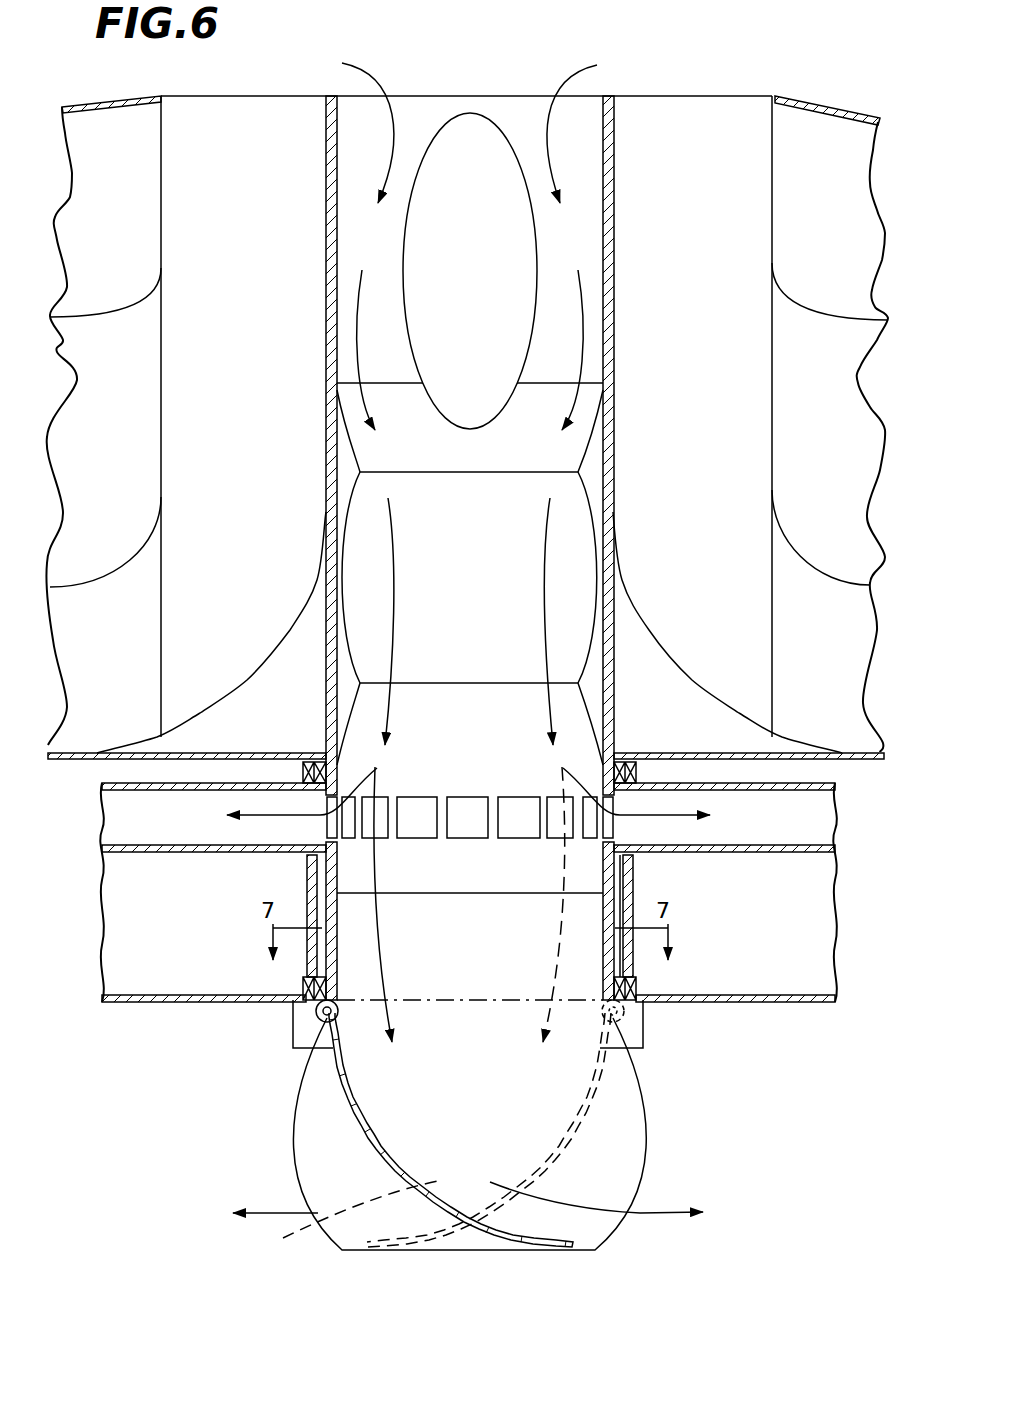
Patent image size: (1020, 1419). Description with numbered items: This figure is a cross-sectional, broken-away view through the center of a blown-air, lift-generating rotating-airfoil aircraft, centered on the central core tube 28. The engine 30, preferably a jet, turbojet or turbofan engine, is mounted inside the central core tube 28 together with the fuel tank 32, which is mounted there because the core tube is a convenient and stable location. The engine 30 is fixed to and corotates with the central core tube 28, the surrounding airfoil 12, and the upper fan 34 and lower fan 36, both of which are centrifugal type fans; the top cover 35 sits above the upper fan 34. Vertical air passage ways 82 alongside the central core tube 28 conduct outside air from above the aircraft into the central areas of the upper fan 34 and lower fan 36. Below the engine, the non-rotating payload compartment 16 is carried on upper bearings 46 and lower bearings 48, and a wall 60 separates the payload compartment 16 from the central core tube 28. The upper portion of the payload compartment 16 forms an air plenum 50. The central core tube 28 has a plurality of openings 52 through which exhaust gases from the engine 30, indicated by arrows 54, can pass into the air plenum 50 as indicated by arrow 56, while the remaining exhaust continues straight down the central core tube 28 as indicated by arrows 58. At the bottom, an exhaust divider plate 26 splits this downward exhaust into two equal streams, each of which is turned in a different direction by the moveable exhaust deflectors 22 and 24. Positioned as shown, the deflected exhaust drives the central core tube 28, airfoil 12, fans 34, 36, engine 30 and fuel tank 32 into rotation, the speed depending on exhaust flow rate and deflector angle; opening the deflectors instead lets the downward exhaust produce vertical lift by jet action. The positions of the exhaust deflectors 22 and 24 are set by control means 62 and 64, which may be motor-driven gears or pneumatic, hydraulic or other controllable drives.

The airfoil 12 is at (848, 320).
The payload compartment 16 is at (760, 1002).
The exhaust deflector 22 is at (553, 1230).
The exhaust deflector 24 is at (290, 1236).
The exhaust divider plate 26 is at (447, 893).
The central core tube 28 is at (612, 96).
The engine 30 is at (603, 455).
The fuel tank 32 is at (535, 250).
The upper fan 34 is at (803, 112).
The top cover 35 is at (855, 108).
The lower fan 36 is at (840, 760).
The upper bearings 46 is at (636, 775).
The lower bearings 48 is at (636, 985).
The air plenum 50 is at (722, 848).
The openings 52 is at (538, 840).
The arrows 54 is at (540, 693).
The arrow 56 is at (230, 815).
The arrows 58 is at (373, 922).
The wall 60 is at (633, 870).
The control means 62 is at (293, 1027).
The control means 64 is at (645, 1027).
The air passage ways 82 is at (668, 96).